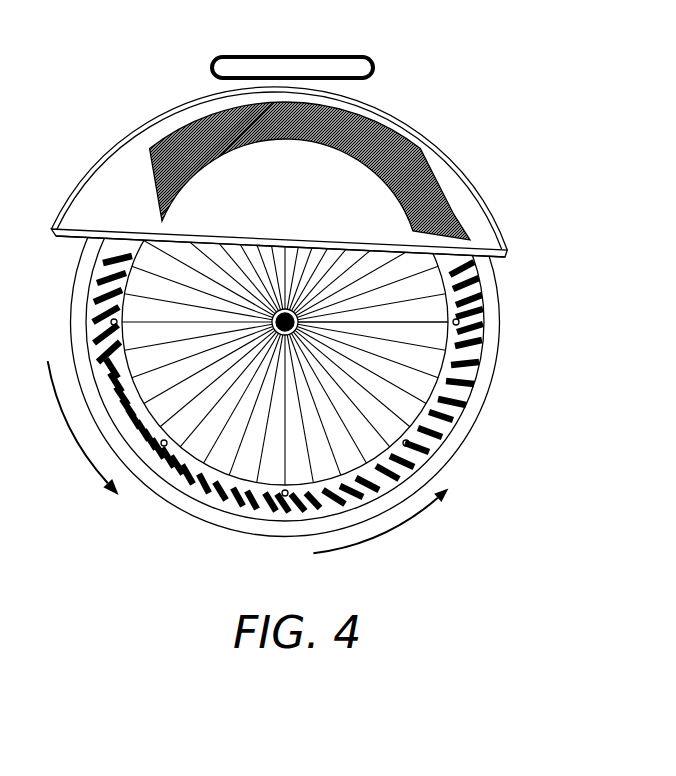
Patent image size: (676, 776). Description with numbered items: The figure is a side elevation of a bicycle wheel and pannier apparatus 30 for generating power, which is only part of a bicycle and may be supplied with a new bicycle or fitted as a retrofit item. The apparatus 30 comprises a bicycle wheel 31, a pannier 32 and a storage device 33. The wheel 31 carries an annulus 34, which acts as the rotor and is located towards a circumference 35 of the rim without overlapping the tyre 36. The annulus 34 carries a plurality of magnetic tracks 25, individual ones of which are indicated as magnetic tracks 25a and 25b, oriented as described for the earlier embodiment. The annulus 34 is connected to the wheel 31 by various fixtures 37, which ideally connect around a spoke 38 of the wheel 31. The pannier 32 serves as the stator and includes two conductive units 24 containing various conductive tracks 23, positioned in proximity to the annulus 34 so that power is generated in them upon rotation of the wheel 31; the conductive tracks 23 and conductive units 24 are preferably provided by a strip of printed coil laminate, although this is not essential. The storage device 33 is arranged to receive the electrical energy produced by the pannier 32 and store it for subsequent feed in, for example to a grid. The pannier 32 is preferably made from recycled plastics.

The conductive tracks 23 is at (466, 237).
The conductive units 24 is at (404, 134).
The magnetic tracks 25 is at (413, 477).
The brake pad segment 25a is at (388, 494).
The brake pad segment 25b is at (370, 498).
The bicycle wheel and pannier apparatus 30 is at (299, 353).
The bicycle wheel 31 is at (319, 327).
The pannier 32 is at (100, 190).
The storage device 33 is at (210, 68).
The annulus 34 is at (321, 419).
The circumference 35 is at (157, 494).
The tyre 36 is at (284, 538).
The fixtures 37 is at (484, 314).
The spoke 38 is at (422, 326).